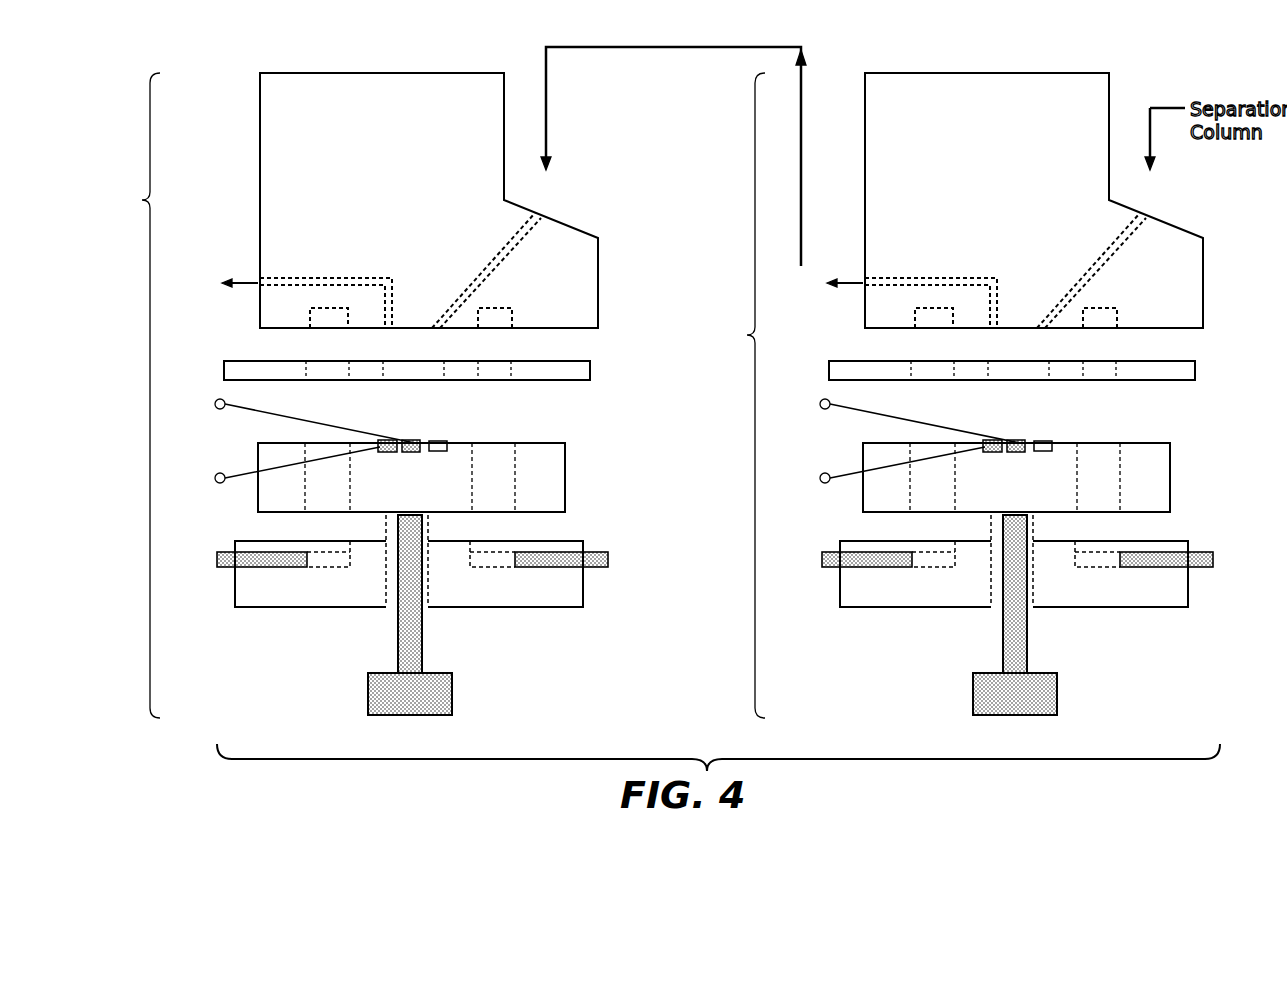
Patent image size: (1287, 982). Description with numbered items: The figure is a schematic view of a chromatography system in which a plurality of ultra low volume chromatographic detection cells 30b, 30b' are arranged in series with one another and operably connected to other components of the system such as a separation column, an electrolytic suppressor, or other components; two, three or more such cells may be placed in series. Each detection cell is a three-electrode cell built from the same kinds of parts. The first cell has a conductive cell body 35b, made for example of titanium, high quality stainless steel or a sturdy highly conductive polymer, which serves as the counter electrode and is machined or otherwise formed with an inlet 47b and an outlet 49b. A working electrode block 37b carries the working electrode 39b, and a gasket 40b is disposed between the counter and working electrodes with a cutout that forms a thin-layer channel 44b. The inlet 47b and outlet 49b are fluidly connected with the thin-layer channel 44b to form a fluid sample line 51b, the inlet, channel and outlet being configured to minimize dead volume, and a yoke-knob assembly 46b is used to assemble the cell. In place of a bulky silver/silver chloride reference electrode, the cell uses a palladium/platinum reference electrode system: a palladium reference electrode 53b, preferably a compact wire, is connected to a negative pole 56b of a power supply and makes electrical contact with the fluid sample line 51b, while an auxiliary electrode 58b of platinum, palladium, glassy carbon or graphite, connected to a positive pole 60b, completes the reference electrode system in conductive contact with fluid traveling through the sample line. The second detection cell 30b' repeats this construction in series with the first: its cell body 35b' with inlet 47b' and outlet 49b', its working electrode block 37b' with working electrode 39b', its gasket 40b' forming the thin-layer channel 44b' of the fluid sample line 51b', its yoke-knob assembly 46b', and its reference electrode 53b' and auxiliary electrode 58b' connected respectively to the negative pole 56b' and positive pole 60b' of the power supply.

The detection cell 30b is at (168, 395).
The conductive cell body 35b is at (465, 200).
The working electrode block 37b is at (449, 471).
The working electrode 39b is at (462, 423).
The gasket 40b is at (446, 360).
The thin-layer channel 44b is at (399, 396).
The yoke-knob assembly 46b is at (435, 615).
The inlet 47b is at (524, 262).
The outlet 49b is at (364, 276).
The fluid sample line 51b is at (389, 239).
The reference electrode 53b is at (444, 487).
The negative pole 56b is at (289, 405).
The auxiliary electrode 58b is at (359, 487).
The positive pole 60b is at (271, 464).
The detection cell 30b' is at (776, 395).
The conductive cell body 35b' is at (1072, 200).
The working electrode block 37b' is at (1056, 471).
The working electrode 39b' is at (1070, 423).
The gasket 40b' is at (1053, 360).
The thin-layer channel 44b' is at (1004, 396).
The yoke-knob assembly 46b' is at (1043, 615).
The inlet 47b' is at (1132, 262).
The outlet 49b' is at (969, 276).
The fluid sample line 51b' is at (997, 239).
The reference electrode 53b' is at (1052, 487).
The negative pole 56b' is at (894, 405).
The auxiliary electrode 58b' is at (964, 487).
The positive pole 60b' is at (876, 464).